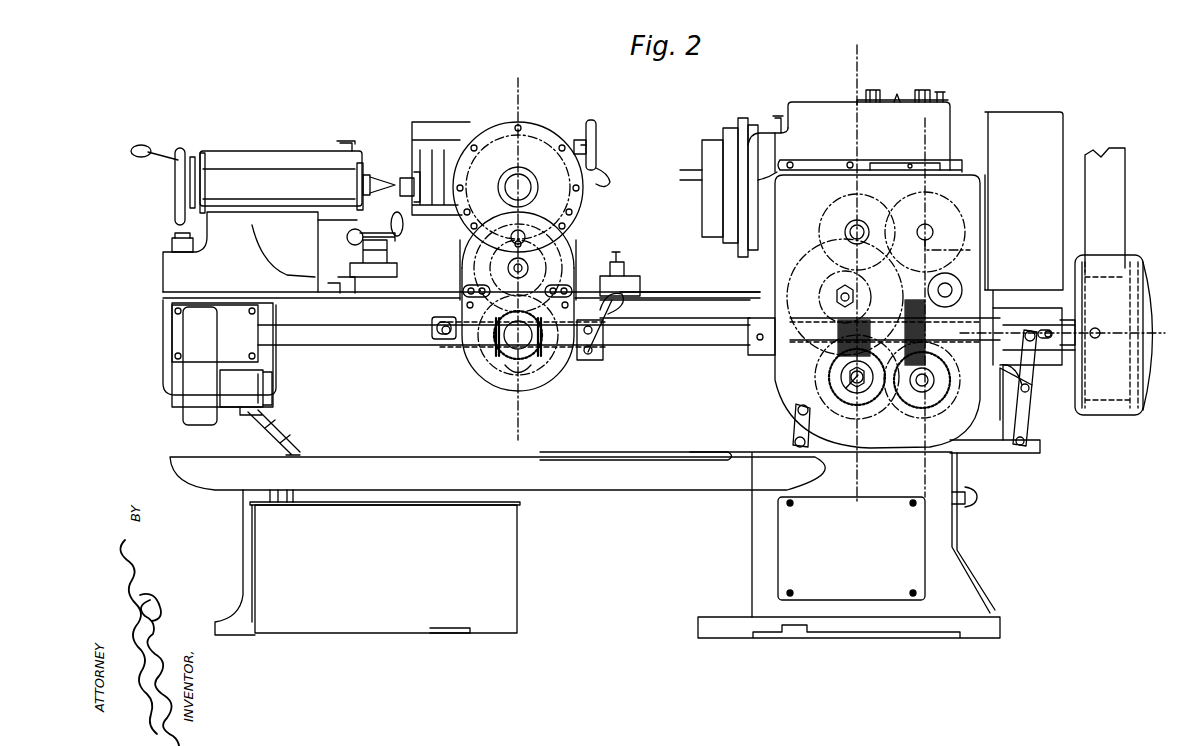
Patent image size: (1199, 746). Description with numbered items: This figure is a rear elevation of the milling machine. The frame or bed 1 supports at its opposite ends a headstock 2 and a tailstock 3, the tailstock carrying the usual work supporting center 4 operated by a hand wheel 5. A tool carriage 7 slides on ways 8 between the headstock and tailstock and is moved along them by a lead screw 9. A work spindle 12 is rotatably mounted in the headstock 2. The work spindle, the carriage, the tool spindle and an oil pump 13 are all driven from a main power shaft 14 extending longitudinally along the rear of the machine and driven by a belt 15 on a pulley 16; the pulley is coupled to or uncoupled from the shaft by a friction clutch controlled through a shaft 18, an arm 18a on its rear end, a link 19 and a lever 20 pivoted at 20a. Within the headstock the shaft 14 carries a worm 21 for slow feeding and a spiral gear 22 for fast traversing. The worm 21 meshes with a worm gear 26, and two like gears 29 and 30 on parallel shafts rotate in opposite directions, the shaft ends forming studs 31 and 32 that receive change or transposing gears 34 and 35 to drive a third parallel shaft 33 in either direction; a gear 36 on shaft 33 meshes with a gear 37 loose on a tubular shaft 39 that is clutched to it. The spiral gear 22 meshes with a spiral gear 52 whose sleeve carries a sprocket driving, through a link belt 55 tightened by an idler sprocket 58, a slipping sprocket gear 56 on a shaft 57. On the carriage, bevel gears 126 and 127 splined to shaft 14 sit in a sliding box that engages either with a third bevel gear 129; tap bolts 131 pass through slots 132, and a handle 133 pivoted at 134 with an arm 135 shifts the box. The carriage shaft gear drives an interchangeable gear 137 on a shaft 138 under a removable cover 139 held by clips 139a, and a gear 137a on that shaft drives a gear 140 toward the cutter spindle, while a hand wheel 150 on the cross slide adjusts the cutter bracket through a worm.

The frame or bed 1 is at (567, 444).
The headstock 2 is at (953, 114).
The tailstock 3 is at (187, 273).
The work supporting center 4 is at (378, 178).
The hand wheel 5 is at (182, 151).
The tool carriage 7 is at (631, 289).
The ways 8 is at (664, 298).
The lead screw 9 is at (850, 64).
The work spindle 12 is at (700, 172).
The oil pump 13 is at (230, 386).
The main power shaft 14 is at (716, 335).
The belt 15 is at (1118, 175).
The pulley 16 is at (1110, 392).
The shaft 18 is at (790, 412).
The arm 18a is at (790, 422).
The link 19 is at (990, 449).
The lever 20 is at (1023, 429).
The pivot 20a is at (1023, 394).
The worm 21 is at (838, 333).
The spiral gear 22 is at (971, 318).
The worm gear 26 is at (830, 382).
The gear 29 is at (856, 408).
The gear 30 is at (945, 354).
The stud 31 is at (854, 388).
The stud 32 is at (928, 331).
The third parallel shaft 33 is at (840, 290).
The change or transposing gear 34 is at (832, 364).
The change or transposing gear 35 is at (800, 258).
The gear 36 is at (836, 296).
The gear 37 is at (830, 204).
The tubular shaft 39 is at (847, 224).
The spiral gear 52 is at (935, 402).
The link belt 55 is at (931, 284).
The sprocket gear 56 is at (950, 202).
The shaft 57 is at (935, 232).
The idler belt tightening sprocket 58 is at (962, 282).
The bevel gear 126 is at (525, 374).
The bevel gear 127 is at (490, 370).
The third bevel gear 129 is at (513, 369).
The tap bolts 131 is at (444, 334).
The slots 132 is at (438, 324).
The handle 133 is at (615, 312).
The pivot 134 is at (600, 360).
The arm 135 is at (565, 352).
The gear 137 is at (572, 236).
The gear 137a is at (545, 248).
The shaft 138 is at (506, 268).
The removable cover 139 is at (478, 263).
The clips 139a is at (518, 262).
The gear 140 is at (530, 140).
The hand wheel 150 is at (598, 130).